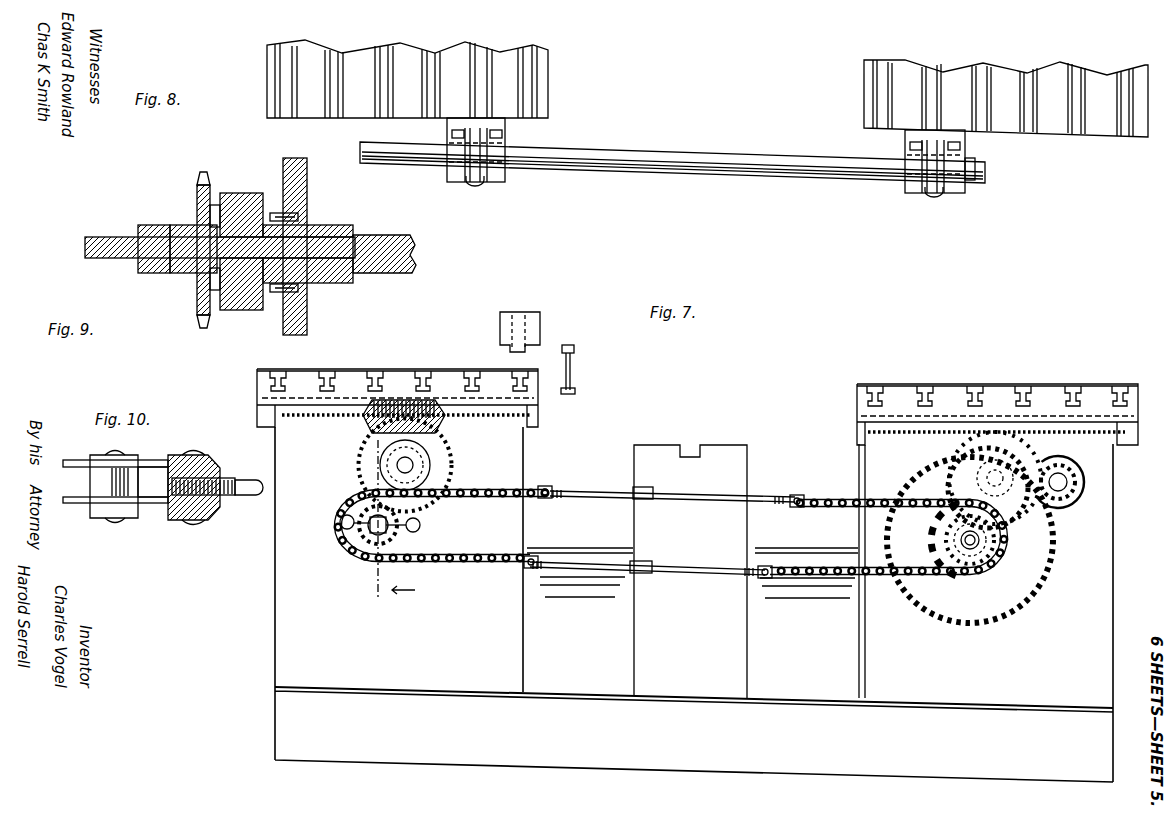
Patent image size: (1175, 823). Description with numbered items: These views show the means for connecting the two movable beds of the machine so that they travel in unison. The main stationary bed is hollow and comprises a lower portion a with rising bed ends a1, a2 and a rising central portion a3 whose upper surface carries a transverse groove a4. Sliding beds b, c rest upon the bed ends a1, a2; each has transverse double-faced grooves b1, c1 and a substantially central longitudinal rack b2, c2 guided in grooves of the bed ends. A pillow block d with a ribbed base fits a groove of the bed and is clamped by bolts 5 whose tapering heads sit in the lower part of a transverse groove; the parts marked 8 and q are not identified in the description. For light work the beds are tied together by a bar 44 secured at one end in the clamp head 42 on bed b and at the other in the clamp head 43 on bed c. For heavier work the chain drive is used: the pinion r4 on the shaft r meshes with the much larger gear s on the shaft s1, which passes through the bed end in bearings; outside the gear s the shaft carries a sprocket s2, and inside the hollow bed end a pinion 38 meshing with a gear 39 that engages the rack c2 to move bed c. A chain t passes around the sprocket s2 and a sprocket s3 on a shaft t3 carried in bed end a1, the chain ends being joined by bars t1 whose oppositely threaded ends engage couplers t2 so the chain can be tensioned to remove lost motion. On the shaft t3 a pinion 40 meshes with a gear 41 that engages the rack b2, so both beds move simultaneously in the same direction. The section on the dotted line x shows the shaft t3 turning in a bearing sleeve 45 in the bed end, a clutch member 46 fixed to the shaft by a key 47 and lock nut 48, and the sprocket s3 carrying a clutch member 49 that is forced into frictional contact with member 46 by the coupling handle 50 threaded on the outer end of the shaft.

In FIG. 7, the lower portion of the main stationary bed a is at (694, 604).
In FIG. 9, the bed end a1 is at (283, 170).
In FIG. 7, the bed end a1 is at (460, 559).
In FIG. 7, the bed end a2 is at (932, 571).
In FIG. 7, the rising central portion a3 is at (772, 571).
In FIG. 7, the transverse groove a4 is at (700, 448).
In FIG. 8, the sliding bed b is at (407, 79).
In FIG. 7, the sliding bed b is at (398, 380).
In FIG. 8, the transverse double-faced grooves b1 is at (338, 58).
In FIG. 7, the transverse double-faced grooves b1 is at (468, 383).
In FIG. 7, the rack b2 is at (528, 420).
In FIG. 7, the rail top surface 8 is at (442, 367).
In FIG. 8, the sliding bed c is at (1006, 98).
In FIG. 7, the sliding bed c is at (1060, 392).
In FIG. 8, the transverse double-faced grooves c1 is at (978, 72).
In FIG. 7, the transverse double-faced grooves c1 is at (972, 396).
In FIG. 7, the rack c2 is at (918, 436).
In FIG. 7, the rail top edge q is at (1028, 386).
In FIG. 7, the pillow block d is at (540, 320).
In FIG. 7, the bolts 5 is at (575, 361).
In FIG. 7, the section line X, X x is at (388, 526).
In FIG. 7, the gear 41 is at (453, 466).
In FIG. 7, the pinion 40 is at (410, 536).
In FIG. 9, the sprocket s3 is at (197, 195).
In FIG. 7, the sprocket s3 is at (350, 530).
In FIG. 9, the shaft t3 is at (400, 238).
In FIG. 7, the shaft t3 is at (366, 540).
In FIG. 10, the chain t is at (92, 505).
In FIG. 7, the chain t is at (502, 566).
In FIG. 10, the bars t1 is at (248, 480).
In FIG. 7, the bars t1 is at (615, 500).
In FIG. 10, the couplers t2 is at (218, 504).
In FIG. 7, the couplers t2 is at (797, 495).
In FIG. 7, the shaft r is at (1072, 478).
In FIG. 7, the pinion r4 is at (1070, 506).
In FIG. 7, the gear s is at (970, 540).
In FIG. 7, the shaft s1 is at (968, 550).
In FIG. 7, the sprocket s2 is at (940, 543).
In FIG. 7, the pinion 38 is at (990, 554).
In FIG. 7, the gear 39 is at (1020, 510).
In FIG. 8, the clamp head 42 is at (488, 182).
In FIG. 8, the clamp head 43 is at (945, 193).
In FIG. 8, the bar 44 is at (712, 150).
In FIG. 9, the bearing sleeve 45 is at (340, 225).
In FIG. 9, the clutch member 46 is at (240, 193).
In FIG. 9, the key 47 is at (258, 292).
In FIG. 9, the lock nut 48 is at (222, 300).
In FIG. 9, the clutch member 49 is at (202, 282).
In FIG. 9, the coupling handle 50 is at (150, 272).